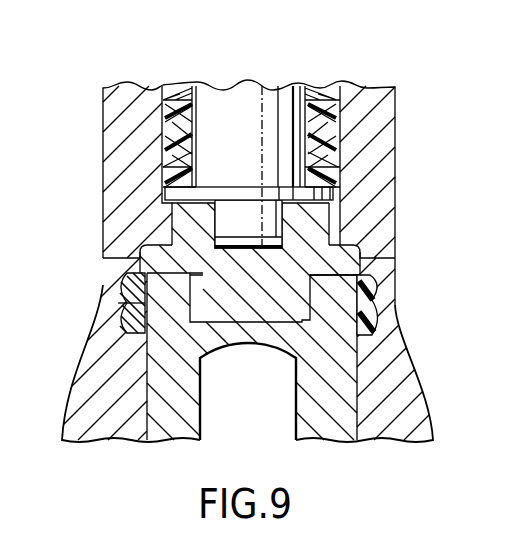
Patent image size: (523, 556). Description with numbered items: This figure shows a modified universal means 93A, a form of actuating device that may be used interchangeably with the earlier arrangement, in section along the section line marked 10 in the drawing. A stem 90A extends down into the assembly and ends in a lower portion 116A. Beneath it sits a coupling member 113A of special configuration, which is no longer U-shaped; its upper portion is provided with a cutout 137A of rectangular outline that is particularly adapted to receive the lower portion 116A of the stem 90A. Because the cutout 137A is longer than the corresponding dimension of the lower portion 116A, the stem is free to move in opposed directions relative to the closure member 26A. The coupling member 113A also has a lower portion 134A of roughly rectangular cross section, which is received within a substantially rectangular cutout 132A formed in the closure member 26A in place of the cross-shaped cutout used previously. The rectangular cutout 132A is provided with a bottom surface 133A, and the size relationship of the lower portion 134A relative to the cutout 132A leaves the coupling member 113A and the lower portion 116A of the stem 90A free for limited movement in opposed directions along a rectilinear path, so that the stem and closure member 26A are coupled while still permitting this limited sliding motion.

The closure member 26A is at (178, 425).
The stem 90A is at (245, 93).
The universal means 93A is at (345, 189).
The coupling member 113A is at (166, 205).
The lower portion of stem 116A is at (223, 218).
The cutout of upper portion 137A is at (290, 221).
The rectangular cutout 132A is at (205, 290).
The bottom surface 133A is at (308, 322).
The lower portion of coupling member 134A is at (222, 314).
The section line 10 is at (103, 258).